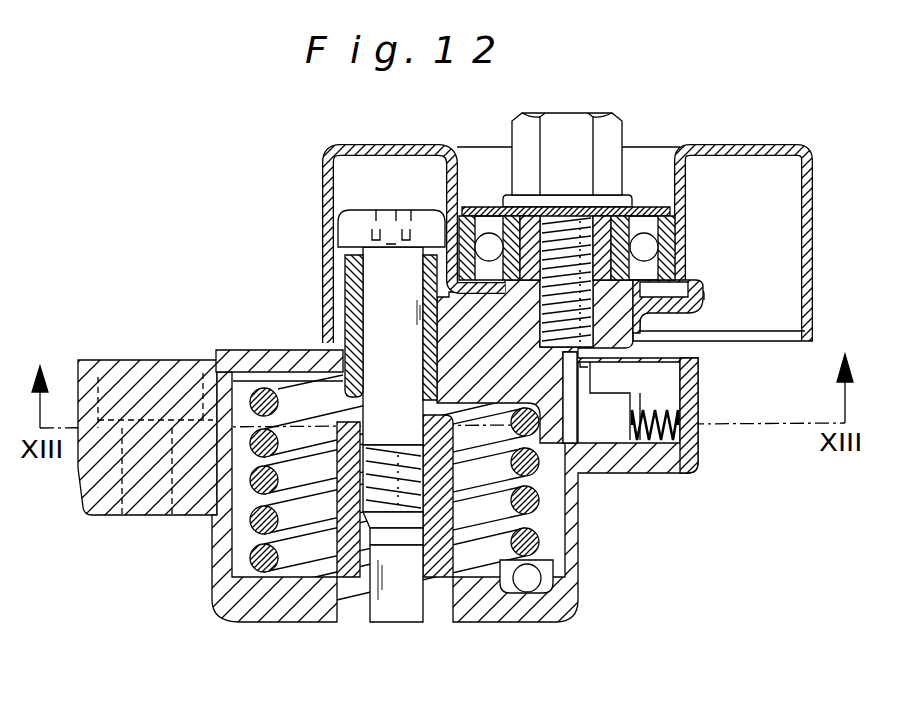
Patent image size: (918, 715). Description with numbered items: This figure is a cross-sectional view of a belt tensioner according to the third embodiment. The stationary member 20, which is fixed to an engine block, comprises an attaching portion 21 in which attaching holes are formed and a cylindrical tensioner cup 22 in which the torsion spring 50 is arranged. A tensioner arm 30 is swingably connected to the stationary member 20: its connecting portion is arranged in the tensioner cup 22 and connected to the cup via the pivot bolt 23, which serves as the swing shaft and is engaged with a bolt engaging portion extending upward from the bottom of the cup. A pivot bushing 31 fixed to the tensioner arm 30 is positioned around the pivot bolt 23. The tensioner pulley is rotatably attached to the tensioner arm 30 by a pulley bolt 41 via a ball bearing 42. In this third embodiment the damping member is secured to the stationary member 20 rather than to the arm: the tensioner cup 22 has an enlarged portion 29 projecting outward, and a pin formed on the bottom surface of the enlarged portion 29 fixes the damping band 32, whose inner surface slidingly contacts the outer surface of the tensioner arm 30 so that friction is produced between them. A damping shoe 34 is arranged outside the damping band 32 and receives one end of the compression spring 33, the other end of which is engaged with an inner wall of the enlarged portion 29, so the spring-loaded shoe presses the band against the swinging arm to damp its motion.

The stationary member 20 is at (336, 620).
The attaching portion 21 is at (112, 517).
The tensioner cup 22 is at (228, 616).
The pivot bolt 23 is at (371, 210).
The enlarged portion 29 is at (698, 445).
The tensioner arm 30 is at (270, 349).
The pivot bushing 31 is at (325, 280).
The damping band 32 is at (571, 437).
The compression spring 33 is at (655, 436).
The damping shoe 34 is at (621, 436).
The pulley bolt 41 is at (510, 167).
The ball bearing 42 is at (655, 246).
The torsion spring 50 is at (548, 546).